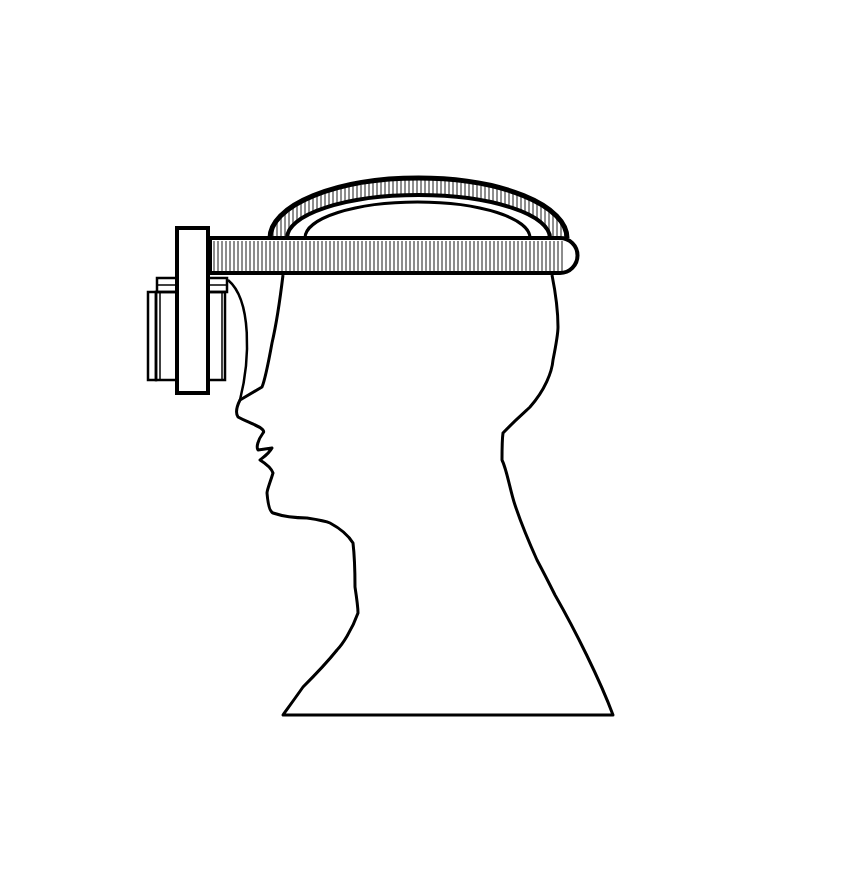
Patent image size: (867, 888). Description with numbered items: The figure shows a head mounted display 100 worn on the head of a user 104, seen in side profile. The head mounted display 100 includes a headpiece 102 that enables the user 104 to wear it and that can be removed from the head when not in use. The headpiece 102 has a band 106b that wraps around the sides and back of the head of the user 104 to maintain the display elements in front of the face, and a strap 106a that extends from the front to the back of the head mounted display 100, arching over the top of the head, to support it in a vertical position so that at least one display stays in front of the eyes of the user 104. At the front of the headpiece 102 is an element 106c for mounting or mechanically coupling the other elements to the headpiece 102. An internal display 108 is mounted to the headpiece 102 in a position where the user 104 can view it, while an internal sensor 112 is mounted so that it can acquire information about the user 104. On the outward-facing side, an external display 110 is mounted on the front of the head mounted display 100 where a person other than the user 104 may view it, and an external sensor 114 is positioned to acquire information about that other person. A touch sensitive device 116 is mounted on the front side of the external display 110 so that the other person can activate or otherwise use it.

The head mounted display 100 is at (263, 60).
The headpiece 102 is at (527, 173).
The user 104 is at (555, 347).
The strap 106a is at (363, 180).
The band 106b is at (247, 237).
The element for mounting 106c is at (180, 228).
The internal display 108 is at (220, 382).
The external display 110 is at (167, 382).
The internal sensor 112 is at (240, 400).
The external sensor 114 is at (172, 278).
The touch sensitive device 116 is at (148, 343).